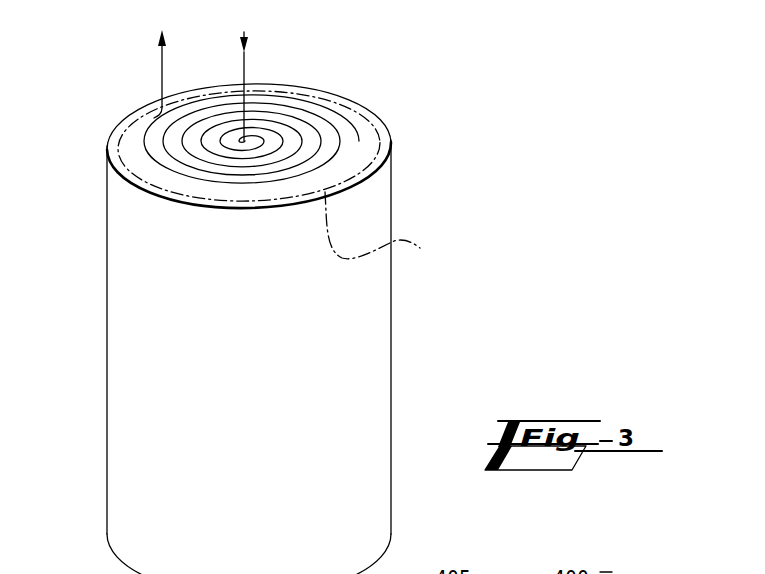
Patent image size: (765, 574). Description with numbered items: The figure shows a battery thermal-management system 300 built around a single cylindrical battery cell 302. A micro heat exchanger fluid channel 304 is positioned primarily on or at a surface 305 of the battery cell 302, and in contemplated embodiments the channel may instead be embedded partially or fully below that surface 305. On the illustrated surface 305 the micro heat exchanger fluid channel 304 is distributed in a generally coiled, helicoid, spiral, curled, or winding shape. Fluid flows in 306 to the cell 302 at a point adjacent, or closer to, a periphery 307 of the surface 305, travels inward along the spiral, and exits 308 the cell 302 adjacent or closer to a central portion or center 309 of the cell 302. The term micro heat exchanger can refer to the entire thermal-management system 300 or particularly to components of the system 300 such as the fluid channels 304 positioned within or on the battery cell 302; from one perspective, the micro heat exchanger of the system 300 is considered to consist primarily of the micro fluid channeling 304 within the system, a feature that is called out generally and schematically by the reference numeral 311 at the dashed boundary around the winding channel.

The battery thermal-management system 300 is at (332, 302).
The battery cell 302 is at (270, 444).
The micro heat exchanger fluid channel 304 is at (106, 128).
The surface 305 is at (380, 130).
The fluid flow in 306 is at (150, 86).
The periphery 307 is at (118, 111).
The fluid exit 308 is at (250, 78).
The central portion 309 is at (265, 210).
The micro fluid channeling 311 is at (389, 228).